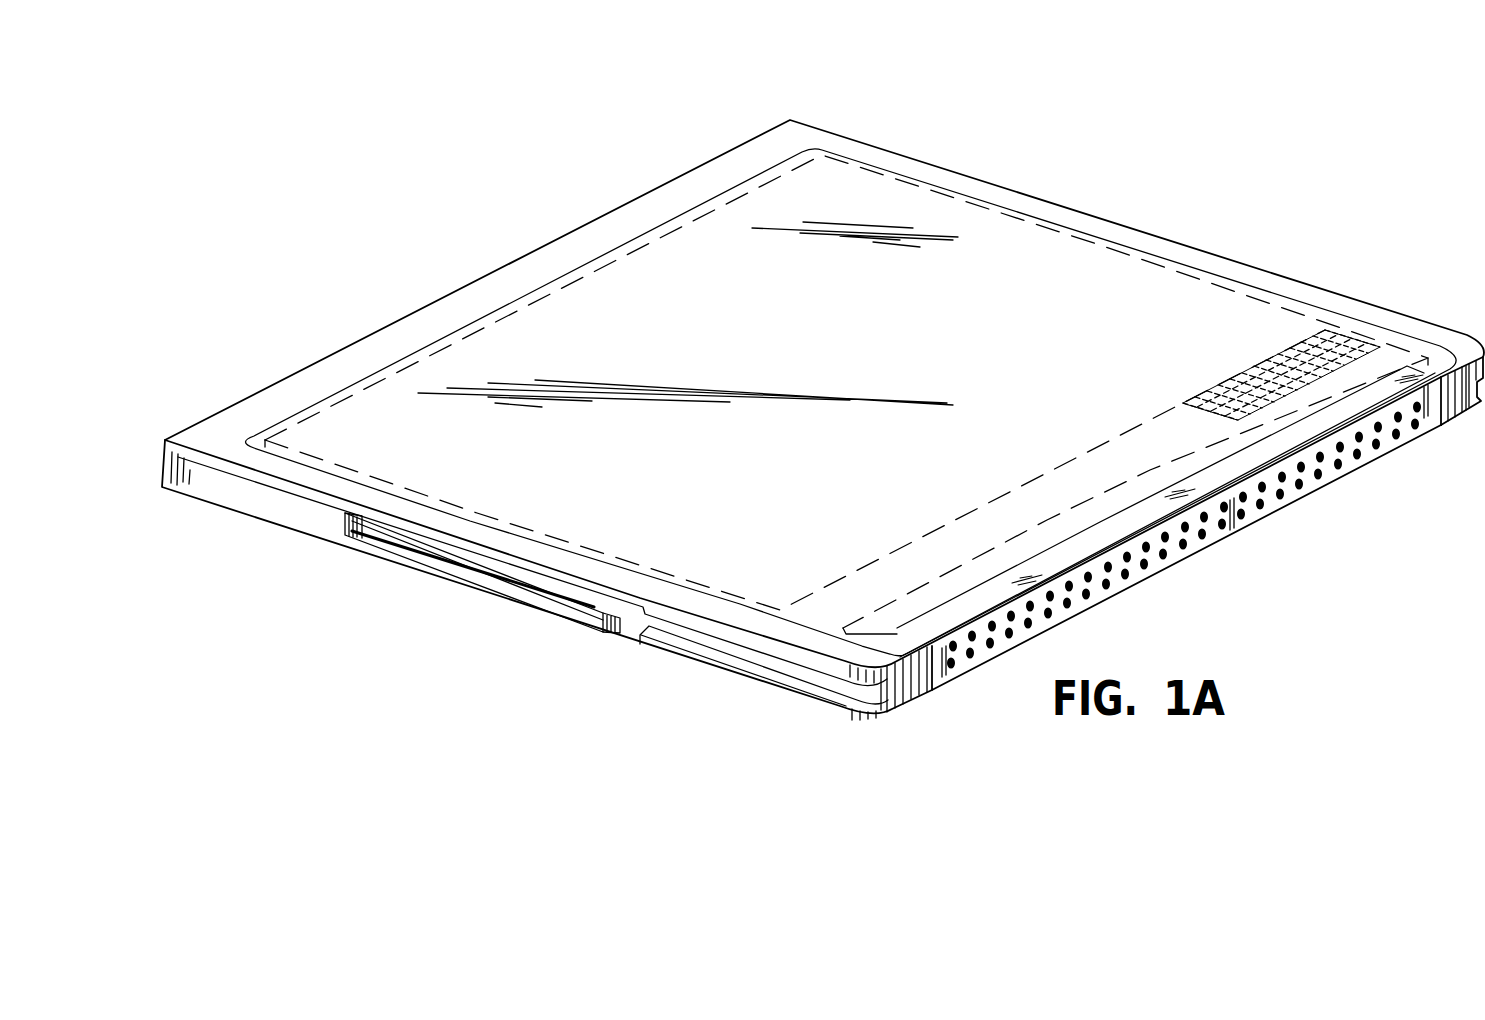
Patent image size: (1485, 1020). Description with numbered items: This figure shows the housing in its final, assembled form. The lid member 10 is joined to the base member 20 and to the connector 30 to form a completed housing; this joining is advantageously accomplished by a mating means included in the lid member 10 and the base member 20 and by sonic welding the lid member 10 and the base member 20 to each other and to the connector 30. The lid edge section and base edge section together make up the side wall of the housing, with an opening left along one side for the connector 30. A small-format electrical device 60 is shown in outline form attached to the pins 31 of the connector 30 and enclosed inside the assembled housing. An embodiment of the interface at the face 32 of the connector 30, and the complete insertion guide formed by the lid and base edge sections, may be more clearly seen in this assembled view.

The lid member 10 is at (818, 120).
The small-format electrical device 60 is at (1015, 243).
The connector 30 is at (1385, 356).
The pins 31 is at (1333, 338).
The face 32 is at (1303, 475).
The base member 20 is at (714, 682).